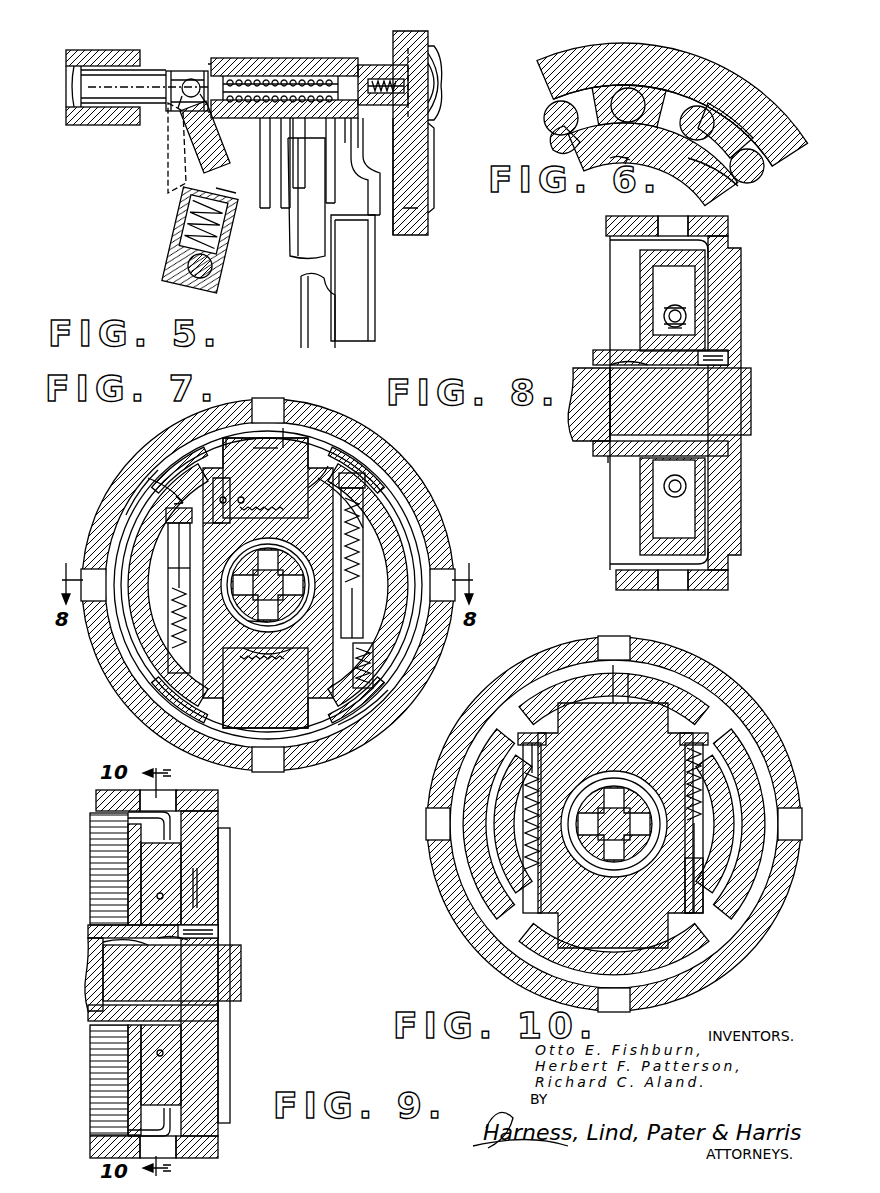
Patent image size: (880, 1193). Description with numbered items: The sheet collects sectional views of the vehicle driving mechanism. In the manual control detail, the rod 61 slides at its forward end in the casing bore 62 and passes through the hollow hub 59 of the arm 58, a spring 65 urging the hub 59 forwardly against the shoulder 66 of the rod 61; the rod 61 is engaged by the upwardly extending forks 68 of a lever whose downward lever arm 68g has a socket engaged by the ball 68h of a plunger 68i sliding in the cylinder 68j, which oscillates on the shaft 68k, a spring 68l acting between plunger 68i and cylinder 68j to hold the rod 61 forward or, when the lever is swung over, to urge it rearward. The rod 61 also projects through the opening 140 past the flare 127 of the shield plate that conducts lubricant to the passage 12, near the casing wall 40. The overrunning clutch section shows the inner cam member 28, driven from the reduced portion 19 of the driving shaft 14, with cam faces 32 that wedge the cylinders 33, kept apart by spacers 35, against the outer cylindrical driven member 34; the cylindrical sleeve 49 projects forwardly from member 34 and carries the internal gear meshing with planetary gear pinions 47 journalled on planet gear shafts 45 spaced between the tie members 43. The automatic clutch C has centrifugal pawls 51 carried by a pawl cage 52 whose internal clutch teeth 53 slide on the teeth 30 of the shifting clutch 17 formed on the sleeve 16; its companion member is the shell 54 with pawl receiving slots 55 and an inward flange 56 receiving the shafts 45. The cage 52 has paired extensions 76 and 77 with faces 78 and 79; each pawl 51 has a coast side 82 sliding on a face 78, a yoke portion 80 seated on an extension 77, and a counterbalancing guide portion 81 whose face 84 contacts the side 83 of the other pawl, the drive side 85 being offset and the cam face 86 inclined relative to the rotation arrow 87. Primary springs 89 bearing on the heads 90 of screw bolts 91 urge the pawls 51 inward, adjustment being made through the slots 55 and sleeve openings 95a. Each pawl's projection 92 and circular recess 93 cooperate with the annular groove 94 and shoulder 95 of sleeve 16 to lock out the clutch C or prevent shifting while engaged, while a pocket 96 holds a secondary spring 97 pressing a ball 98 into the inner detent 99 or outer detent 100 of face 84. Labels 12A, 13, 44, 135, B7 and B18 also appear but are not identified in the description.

In FIG. 5, the passage 12 is at (285, 240).
In FIG. 5, the housing wall 12A is at (422, 150).
In FIG. 5, the plate 13 is at (340, 253).
In FIG. 8, the driving shaft 14 is at (566, 415).
In FIG. 9, the driving shaft 14 is at (82, 956).
In FIG. 8, the sleeve 16 is at (590, 348).
In FIG. 9, the sleeve 16 is at (82, 925).
In FIG. 7, the shifting clutch 17 is at (168, 560).
In FIG. 8, the reduced portion 19 is at (745, 385).
In FIG. 7, the reduced portion 19 is at (240, 613).
In FIG. 9, the reduced portion 19 is at (235, 955).
In FIG. 10, the reduced portion 19 is at (620, 803).
In FIG. 6, the inner cam member 28 is at (717, 180).
In FIG. 8, the teeth 30 is at (720, 350).
In FIG. 9, the teeth 30 is at (212, 922).
In FIG. 6, the cam faces 32 is at (659, 62).
In FIG. 6, the cylinders 33 is at (705, 76).
In FIG. 6, the outer cylindrical driven member 34 is at (735, 95).
In FIG. 6, the spacers 35 is at (574, 64).
In FIG. 5, the wall 40 is at (420, 203).
In FIG. 9, the tie members 43 is at (125, 1076).
In FIG. 9, the clutch disc 44 is at (90, 1088).
In FIG. 9, the planet gear shafts 45 is at (100, 848).
In FIG. 9, the planetary gear pinions 47 is at (122, 870).
In FIG. 8, the cylindrical sleeve 49 is at (600, 214).
In FIG. 7, the cylindrical sleeve 49 is at (438, 515).
In FIG. 9, the cylindrical sleeve 49 is at (85, 1140).
In FIG. 10, the cylindrical sleeve 49 is at (700, 660).
In FIG. 7, the pawls 51 is at (306, 400).
In FIG. 9, the pawls 51 is at (161, 974).
In FIG. 10, the pawls 51 is at (592, 722).
In FIG. 8, the pawl cage 52 is at (705, 270).
In FIG. 9, the pawl cage 52 is at (215, 880).
In FIG. 9, the internal clutch teeth 53 is at (200, 895).
In FIG. 7, the shell 54 is at (368, 440).
In FIG. 10, the shell 54 is at (725, 685).
In FIG. 7, the pawl receiving slots 55 is at (402, 512).
In FIG. 10, the pawl receiving slots 55 is at (720, 745).
In FIG. 8, the flange 56 is at (632, 252).
In FIG. 9, the flange 56 is at (120, 806).
In FIG. 5, the arm 58 is at (342, 128).
In FIG. 5, the hollow hub 59 is at (288, 52).
In FIG. 5, the rod 61 is at (118, 62).
In FIG. 5, the casing bore 62 is at (174, 66).
In FIG. 5, the spring 65 is at (270, 56).
In FIG. 5, the shoulder 66 is at (212, 58).
In FIG. 5, the forks 68 is at (168, 92).
In FIG. 5, the lever arm 68g is at (188, 112).
In FIG. 5, the ball 68h is at (175, 160).
In FIG. 5, the plunger 68i is at (178, 236).
In FIG. 5, the cylinder 68j is at (178, 216).
In FIG. 5, the shaft 68k is at (162, 258).
In FIG. 5, the spring 68l is at (216, 232).
In FIG. 7, the pawl guides 76 is at (395, 485).
In FIG. 7, the extensions 77 is at (178, 442).
In FIG. 7, the pawl engaging faces 78 is at (340, 440).
In FIG. 7, the bearing faces 79 is at (220, 420).
In FIG. 8, the yoke portion 80 is at (666, 297).
In FIG. 7, the yoke portion 80 is at (352, 576).
In FIG. 7, the guide counterbalancing portion 81 is at (278, 650).
In FIG. 7, the coast side 82 is at (302, 470).
In FIG. 7, the side 83 is at (250, 430).
In FIG. 7, the face 84 is at (240, 520).
In FIG. 10, the drive side 85 is at (600, 658).
In FIG. 7, the cam face 86 is at (276, 430).
In FIG. 10, the cam face 86 is at (618, 672).
In FIG. 7, the arrow 87 is at (140, 470).
In FIG. 8, the springs 89 is at (655, 305).
In FIG. 7, the springs 89 is at (352, 560).
In FIG. 10, the springs 89 is at (512, 800).
In FIG. 7, the head 90 is at (392, 470).
In FIG. 8, the screw bolt 91 is at (656, 316).
In FIG. 7, the screw bolt 91 is at (352, 592).
In FIG. 10, the screw bolt 91 is at (512, 780).
In FIG. 8, the projection 92 is at (650, 356).
In FIG. 7, the projection 92 is at (268, 585).
In FIG. 10, the projection 92 is at (614, 824).
In FIG. 7, the circular recessed portion 93 is at (258, 535).
In FIG. 10, the circular recessed portion 93 is at (614, 824).
In FIG. 9, the annular groove 94 is at (168, 932).
In FIG. 9, the shoulder 95 is at (150, 935).
In FIG. 8, the openings 95a is at (638, 212).
In FIG. 7, the openings 95a is at (295, 770).
In FIG. 9, the openings 95a is at (175, 1150).
In FIG. 10, the openings 95a is at (614, 1000).
In FIG. 7, the pocket 96 is at (238, 490).
In FIG. 7, the spring 97 is at (255, 500).
In FIG. 7, the ball 98 is at (222, 470).
In FIG. 7, the inner detent 99 is at (212, 515).
In FIG. 7, the outer detent 100 is at (215, 490).
In FIG. 5, the flare 127 is at (430, 54).
In FIG. 5, the flange 135 is at (434, 70).
In FIG. 5, the opening 140 is at (388, 48).
In FIG. 5, the plate B7 is at (360, 334).
In FIG. 5, the plate B18 is at (252, 190).
In FIG. 8, the automatic clutch C is at (604, 458).
In FIG. 7, the automatic clutch C is at (440, 530).
In FIG. 10, the automatic clutch C is at (413, 809).